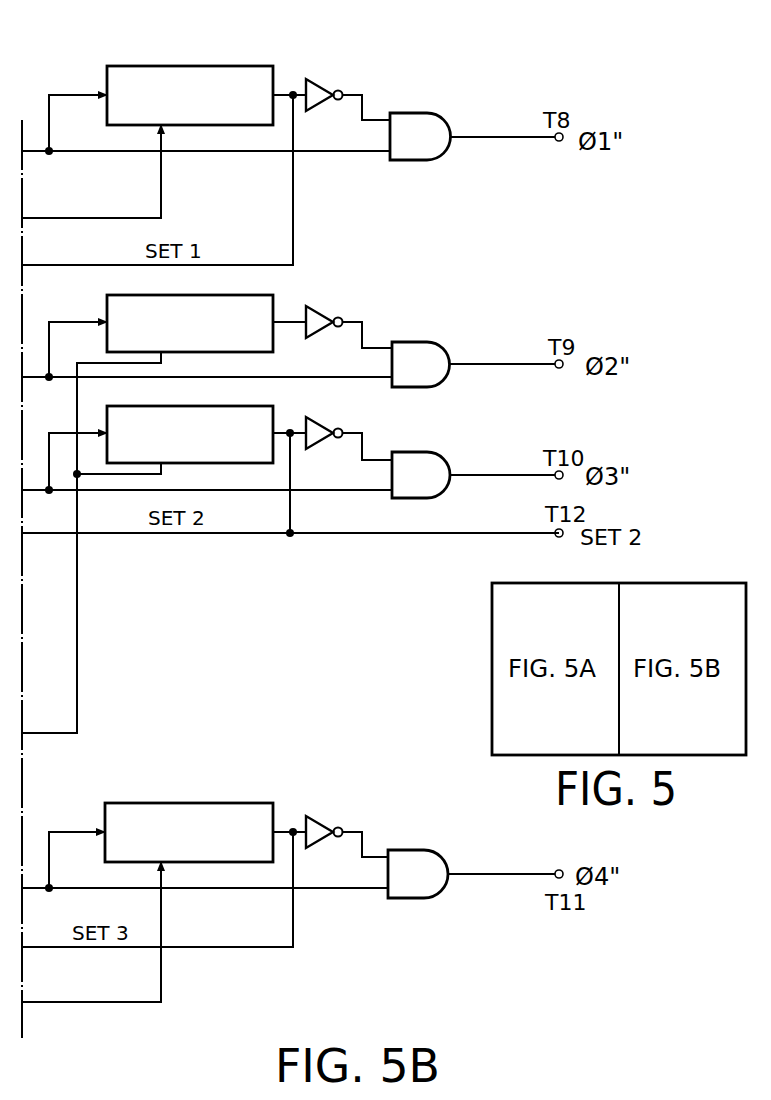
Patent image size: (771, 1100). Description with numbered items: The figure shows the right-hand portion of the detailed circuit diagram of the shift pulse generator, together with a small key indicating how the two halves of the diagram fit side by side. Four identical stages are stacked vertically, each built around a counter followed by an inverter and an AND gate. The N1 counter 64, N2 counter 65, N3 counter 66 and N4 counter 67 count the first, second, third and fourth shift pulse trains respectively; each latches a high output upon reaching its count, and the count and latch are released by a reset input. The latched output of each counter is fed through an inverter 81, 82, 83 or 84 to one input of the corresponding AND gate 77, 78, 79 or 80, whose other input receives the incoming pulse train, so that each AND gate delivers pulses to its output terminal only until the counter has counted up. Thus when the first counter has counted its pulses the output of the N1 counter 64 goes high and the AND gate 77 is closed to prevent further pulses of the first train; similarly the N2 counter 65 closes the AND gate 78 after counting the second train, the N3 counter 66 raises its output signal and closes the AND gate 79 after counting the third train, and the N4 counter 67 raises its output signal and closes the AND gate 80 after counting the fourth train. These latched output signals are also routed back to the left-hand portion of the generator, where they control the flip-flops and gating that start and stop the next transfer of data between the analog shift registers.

The N1 counter 64 is at (235, 66).
The N2 counter 65 is at (260, 295).
The N3 counter 66 is at (255, 406).
The N4 counter 67 is at (228, 803).
The inverter 81 is at (319, 86).
The inverter 82 is at (320, 312).
The inverter 83 is at (320, 422).
The inverter 84 is at (320, 824).
The AND gate 77 is at (433, 112).
The AND gate 78 is at (433, 340).
The AND gate 79 is at (433, 450).
The AND gate 80 is at (430, 850).